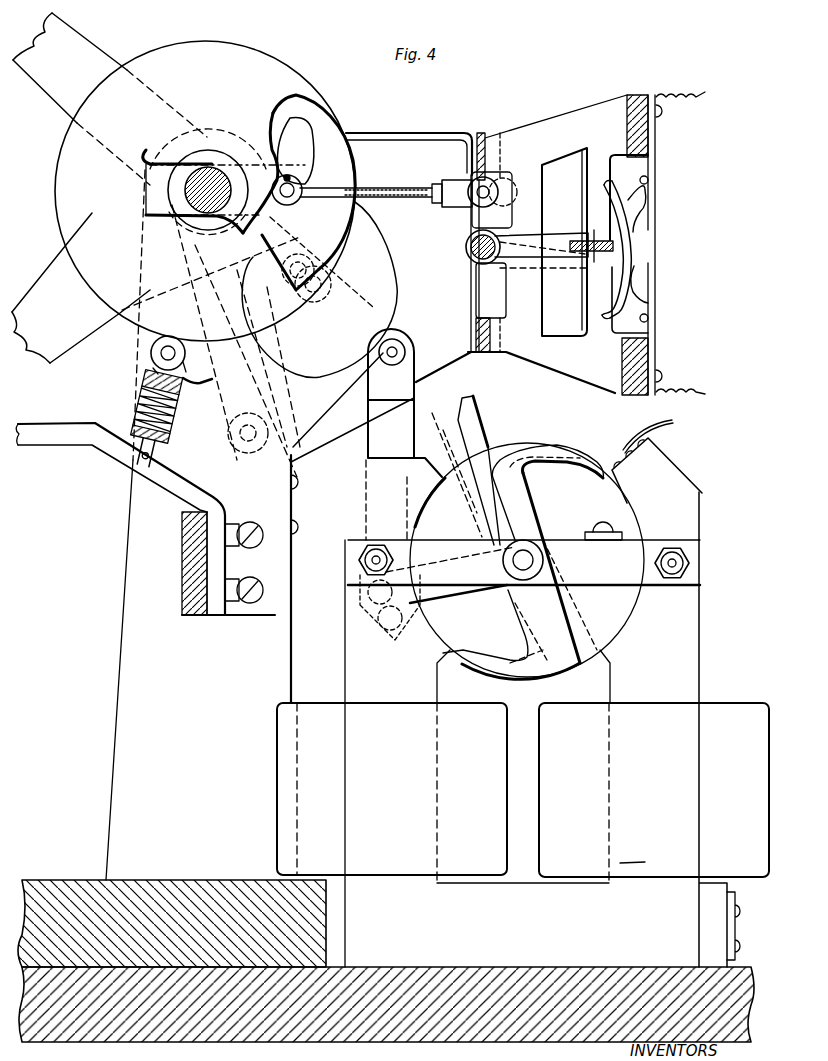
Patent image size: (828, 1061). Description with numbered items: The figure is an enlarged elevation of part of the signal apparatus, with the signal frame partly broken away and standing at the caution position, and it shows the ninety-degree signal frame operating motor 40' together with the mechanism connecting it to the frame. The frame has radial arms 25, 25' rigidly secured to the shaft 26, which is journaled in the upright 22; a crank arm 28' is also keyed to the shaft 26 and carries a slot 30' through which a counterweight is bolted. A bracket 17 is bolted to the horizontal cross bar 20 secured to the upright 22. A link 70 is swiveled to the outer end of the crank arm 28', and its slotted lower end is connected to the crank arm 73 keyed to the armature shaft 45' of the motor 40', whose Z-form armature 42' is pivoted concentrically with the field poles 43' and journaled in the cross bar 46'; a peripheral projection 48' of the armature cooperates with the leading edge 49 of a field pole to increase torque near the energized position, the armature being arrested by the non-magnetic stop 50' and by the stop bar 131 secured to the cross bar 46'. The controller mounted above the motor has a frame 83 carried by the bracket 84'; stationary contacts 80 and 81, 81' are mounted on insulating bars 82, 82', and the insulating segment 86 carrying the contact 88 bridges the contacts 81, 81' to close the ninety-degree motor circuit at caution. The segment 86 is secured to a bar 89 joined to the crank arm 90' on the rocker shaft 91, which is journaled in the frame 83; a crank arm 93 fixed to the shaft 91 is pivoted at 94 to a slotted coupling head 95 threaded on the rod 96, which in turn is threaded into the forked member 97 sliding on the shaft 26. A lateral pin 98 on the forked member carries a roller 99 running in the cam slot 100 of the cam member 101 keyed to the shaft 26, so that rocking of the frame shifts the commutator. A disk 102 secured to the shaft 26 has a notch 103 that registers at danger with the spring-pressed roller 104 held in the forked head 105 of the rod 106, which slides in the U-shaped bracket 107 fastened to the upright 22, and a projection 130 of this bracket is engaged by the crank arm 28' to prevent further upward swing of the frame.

The disk 102 is at (162, 68).
The shaft 26 is at (212, 188).
The cam member 101 is at (289, 103).
The cam slot 100 is at (284, 125).
The lateral pin 98 is at (290, 175).
The roller 99 is at (291, 188).
The forked member 97 is at (204, 182).
The rod 96 is at (396, 197).
The pivot 94 is at (476, 188).
The slotted coupling head 95 is at (453, 195).
The bracket 84' is at (480, 248).
The frame 83 is at (567, 128).
The insulating bar 82 is at (666, 231).
The contact 88 is at (616, 182).
The stationary contact 81 is at (663, 205).
The crank arm 90' is at (541, 236).
The bar 89 is at (600, 241).
The segment 86 is at (629, 252).
The crank arm 93 is at (468, 247).
The rocker shaft 91 is at (483, 262).
The stationary contact 81' is at (666, 284).
The stationary contact 80 is at (649, 358).
The slot 30' is at (338, 371).
The crank arm 28' is at (395, 441).
The notch 103 is at (286, 322).
The radial arm 25' is at (110, 99).
The radial arm 25 is at (81, 288).
The spring-pressed roller 104 is at (152, 353).
The forked head 105 is at (160, 363).
The projection 130 is at (197, 378).
The U-shaped bracket 107 is at (168, 415).
The rod 106 is at (147, 450).
The bracket 17 is at (64, 445).
The link 70 is at (376, 437).
The peripheral projection 48' is at (473, 462).
The armature 42' is at (527, 545).
The insulating bar 82' is at (635, 410).
The stop 50' is at (663, 431).
The leading edge of field pole 49 is at (637, 453).
The field pole 43' is at (676, 470).
The armature shaft 45' is at (524, 544).
The stop bar 131 is at (622, 535).
The cross bar 46' is at (704, 558).
The horizontal cross bar 20 is at (190, 572).
The upright 22 is at (137, 640).
The crank arm 73 is at (437, 592).
The 90-degree motor 40' is at (523, 793).